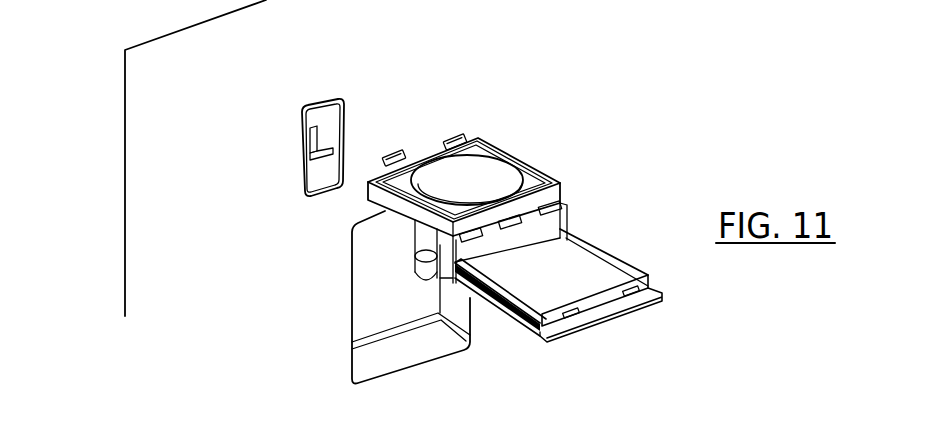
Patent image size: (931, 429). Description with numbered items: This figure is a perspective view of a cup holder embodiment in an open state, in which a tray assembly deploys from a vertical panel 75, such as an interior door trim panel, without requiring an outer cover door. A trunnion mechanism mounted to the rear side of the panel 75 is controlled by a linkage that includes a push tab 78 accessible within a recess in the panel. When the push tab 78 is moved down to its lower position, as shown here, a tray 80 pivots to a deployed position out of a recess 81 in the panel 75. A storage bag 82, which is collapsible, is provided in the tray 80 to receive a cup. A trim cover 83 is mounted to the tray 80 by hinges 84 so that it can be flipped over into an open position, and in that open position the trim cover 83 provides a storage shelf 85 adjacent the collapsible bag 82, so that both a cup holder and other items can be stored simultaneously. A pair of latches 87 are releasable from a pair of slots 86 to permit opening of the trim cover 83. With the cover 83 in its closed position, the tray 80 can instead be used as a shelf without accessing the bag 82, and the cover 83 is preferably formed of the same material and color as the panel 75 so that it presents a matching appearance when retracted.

The vertical panel 75 is at (165, 210).
The push tab 78 is at (305, 157).
The tray 80 is at (550, 196).
The recess 81 is at (380, 288).
The storage bag 82 is at (480, 168).
The trim cover 83 is at (527, 327).
The hinges 84 is at (562, 208).
The storage shelf 85 is at (572, 264).
The slots 86 is at (578, 317).
The latches 87 is at (393, 157).